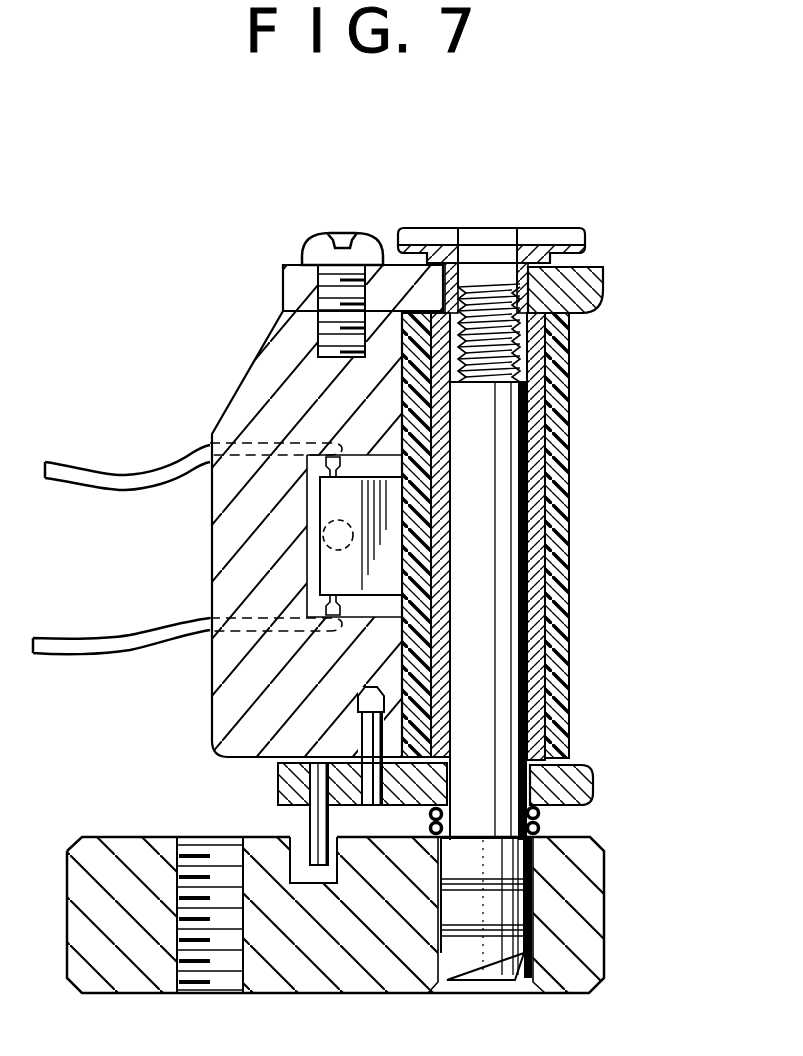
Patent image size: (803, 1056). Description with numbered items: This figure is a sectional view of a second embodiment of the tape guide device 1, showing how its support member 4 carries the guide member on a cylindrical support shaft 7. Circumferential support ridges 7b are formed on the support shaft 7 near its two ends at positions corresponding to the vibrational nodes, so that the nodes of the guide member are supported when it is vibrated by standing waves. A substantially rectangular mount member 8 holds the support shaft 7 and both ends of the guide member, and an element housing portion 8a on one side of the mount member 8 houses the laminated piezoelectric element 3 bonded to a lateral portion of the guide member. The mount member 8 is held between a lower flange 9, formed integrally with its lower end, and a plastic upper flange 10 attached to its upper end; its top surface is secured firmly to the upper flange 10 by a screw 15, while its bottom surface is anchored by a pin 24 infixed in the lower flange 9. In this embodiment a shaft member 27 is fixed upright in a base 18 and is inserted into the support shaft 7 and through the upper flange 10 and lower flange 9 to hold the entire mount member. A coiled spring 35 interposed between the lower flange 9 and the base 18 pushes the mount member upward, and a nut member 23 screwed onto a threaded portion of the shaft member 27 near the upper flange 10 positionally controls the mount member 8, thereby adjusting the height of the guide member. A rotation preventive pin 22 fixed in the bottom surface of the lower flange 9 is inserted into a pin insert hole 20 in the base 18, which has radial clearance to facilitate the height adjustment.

The tape guide device 1 is at (206, 360).
The laminated piezoelectric element 3 is at (325, 570).
The support member 4 is at (604, 250).
The support shaft 7 is at (540, 600).
The support ridges 7b is at (553, 368).
The mount member 8 is at (281, 350).
The element housing portion 8a is at (308, 478).
The lower flange 9 is at (590, 780).
The upper flange 10 is at (585, 288).
The screw 15 is at (310, 250).
The base 18 is at (100, 850).
The pin insert hole 20 is at (300, 834).
The rotation preventive pin 22 is at (314, 814).
The nut member 23 is at (537, 242).
The pin 24 is at (362, 727).
The shaft member 27 is at (507, 496).
The coiled spring 35 is at (545, 825).